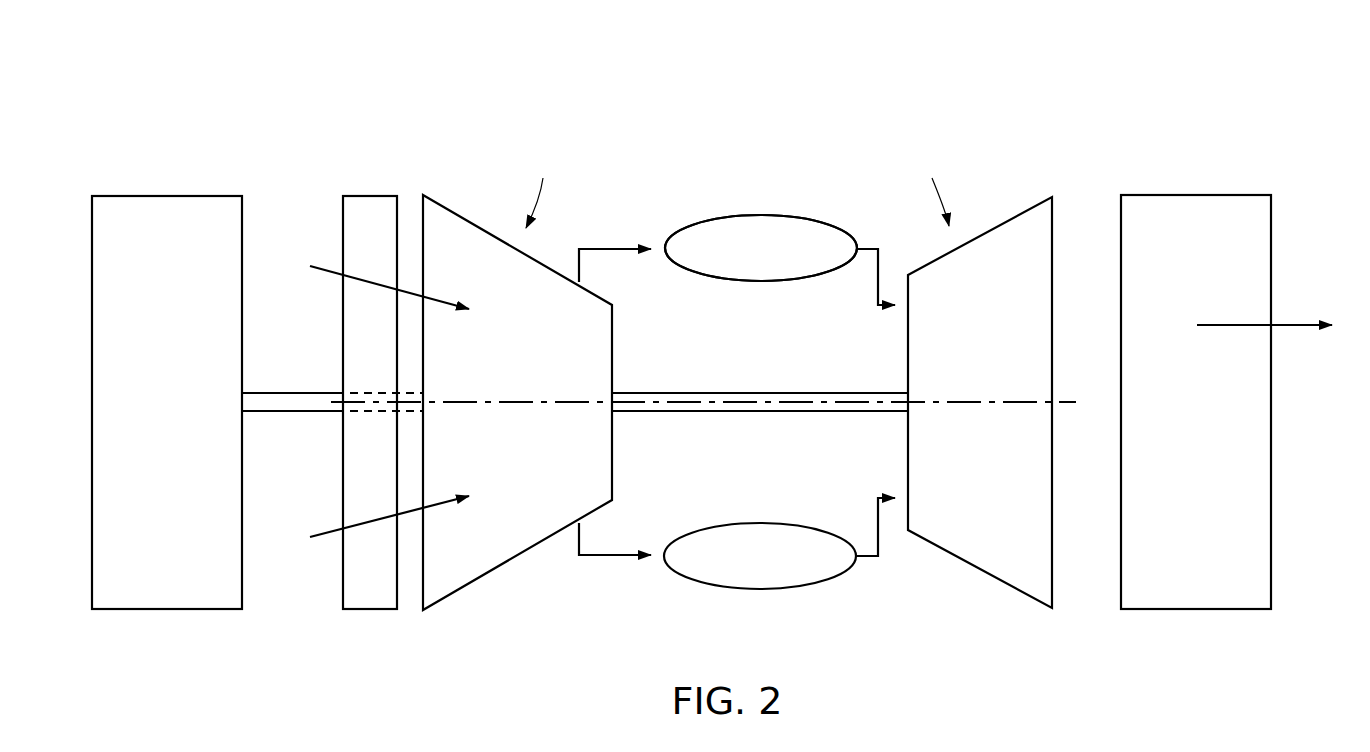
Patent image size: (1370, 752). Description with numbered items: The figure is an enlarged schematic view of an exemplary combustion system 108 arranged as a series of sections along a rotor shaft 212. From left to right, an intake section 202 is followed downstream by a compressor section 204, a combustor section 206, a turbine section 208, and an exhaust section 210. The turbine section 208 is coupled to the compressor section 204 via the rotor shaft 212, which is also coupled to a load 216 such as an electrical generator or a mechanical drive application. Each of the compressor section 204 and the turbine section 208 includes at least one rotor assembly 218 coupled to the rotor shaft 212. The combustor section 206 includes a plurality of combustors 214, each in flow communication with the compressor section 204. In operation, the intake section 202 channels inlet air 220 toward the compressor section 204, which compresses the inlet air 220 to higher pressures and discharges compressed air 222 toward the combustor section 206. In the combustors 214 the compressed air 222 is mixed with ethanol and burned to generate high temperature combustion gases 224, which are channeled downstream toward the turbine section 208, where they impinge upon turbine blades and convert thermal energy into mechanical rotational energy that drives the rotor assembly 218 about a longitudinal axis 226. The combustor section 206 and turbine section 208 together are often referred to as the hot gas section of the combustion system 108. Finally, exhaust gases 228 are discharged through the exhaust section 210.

The combustion system 108 is at (916, 86).
The intake section 202 is at (369, 196).
The compressor section 204 is at (463, 218).
The combustor section 206 is at (796, 208).
The turbine section 208 is at (1007, 221).
The exhaust section 210 is at (1197, 195).
The rotor shaft 212 is at (760, 412).
The combustor 214 is at (760, 402).
The load 216 is at (166, 196).
The rotor assembly 218 is at (737, 189).
The inlet air 220 is at (311, 265).
The compressed air 222 is at (621, 249).
The combustion gases 224 is at (859, 251).
The longitudinal axis 226 is at (1068, 399).
The exhaust gases 228 is at (1238, 325).